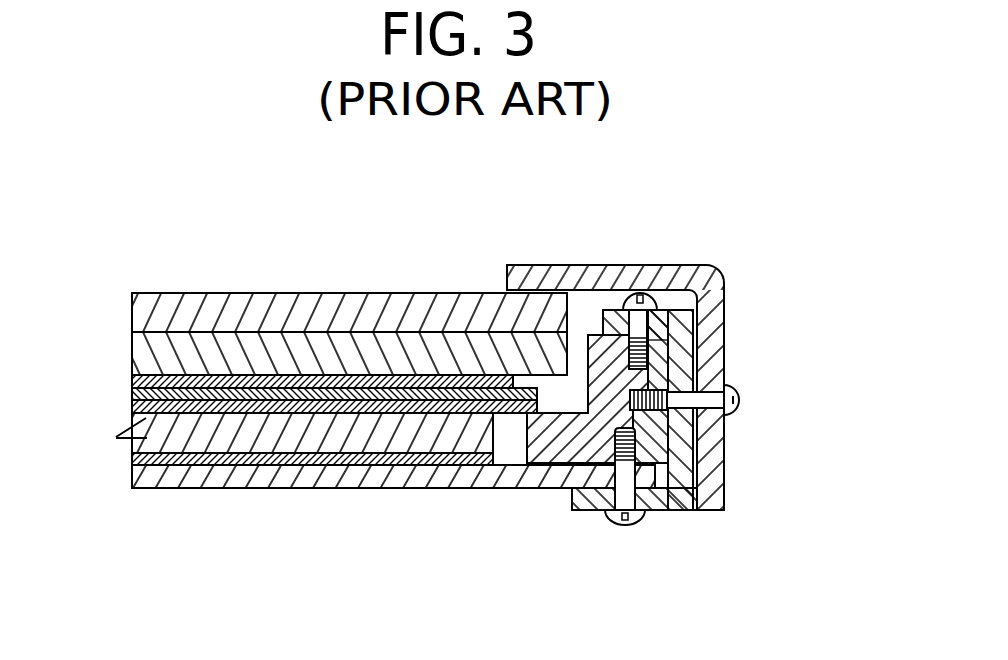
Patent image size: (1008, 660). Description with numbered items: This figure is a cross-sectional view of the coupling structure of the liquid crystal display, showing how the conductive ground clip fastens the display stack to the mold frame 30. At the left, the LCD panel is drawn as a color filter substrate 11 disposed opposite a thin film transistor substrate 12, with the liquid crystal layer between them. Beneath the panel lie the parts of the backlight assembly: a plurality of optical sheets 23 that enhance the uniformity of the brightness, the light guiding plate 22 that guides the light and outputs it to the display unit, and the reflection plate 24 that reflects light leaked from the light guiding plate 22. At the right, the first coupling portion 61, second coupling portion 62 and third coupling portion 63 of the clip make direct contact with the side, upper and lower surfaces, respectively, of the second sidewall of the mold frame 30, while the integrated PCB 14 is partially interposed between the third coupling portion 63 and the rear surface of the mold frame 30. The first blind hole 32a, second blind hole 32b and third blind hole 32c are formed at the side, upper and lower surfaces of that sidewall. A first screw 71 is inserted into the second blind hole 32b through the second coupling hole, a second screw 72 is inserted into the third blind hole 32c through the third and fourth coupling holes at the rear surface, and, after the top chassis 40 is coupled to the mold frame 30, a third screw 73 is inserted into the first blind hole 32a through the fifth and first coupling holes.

The color filter substrate 11 is at (340, 306).
The thin film transistor substrate 12 is at (414, 336).
The integrated PCB 14 is at (375, 480).
The light guiding plate 22 is at (457, 441).
The optical sheets 23 is at (124, 376).
The reflection plate 24 is at (305, 467).
The mold frame 30 is at (553, 465).
The first blind hole 32a is at (724, 333).
The second blind hole 32b is at (613, 338).
The third blind hole 32c is at (724, 508).
The top chassis 40 is at (725, 334).
The first coupling portion 61 is at (686, 432).
The second coupling portion 62 is at (662, 332).
The third coupling portion 63 is at (664, 510).
The first screw 71 is at (640, 303).
The second screw 72 is at (638, 524).
The third screw 73 is at (736, 388).